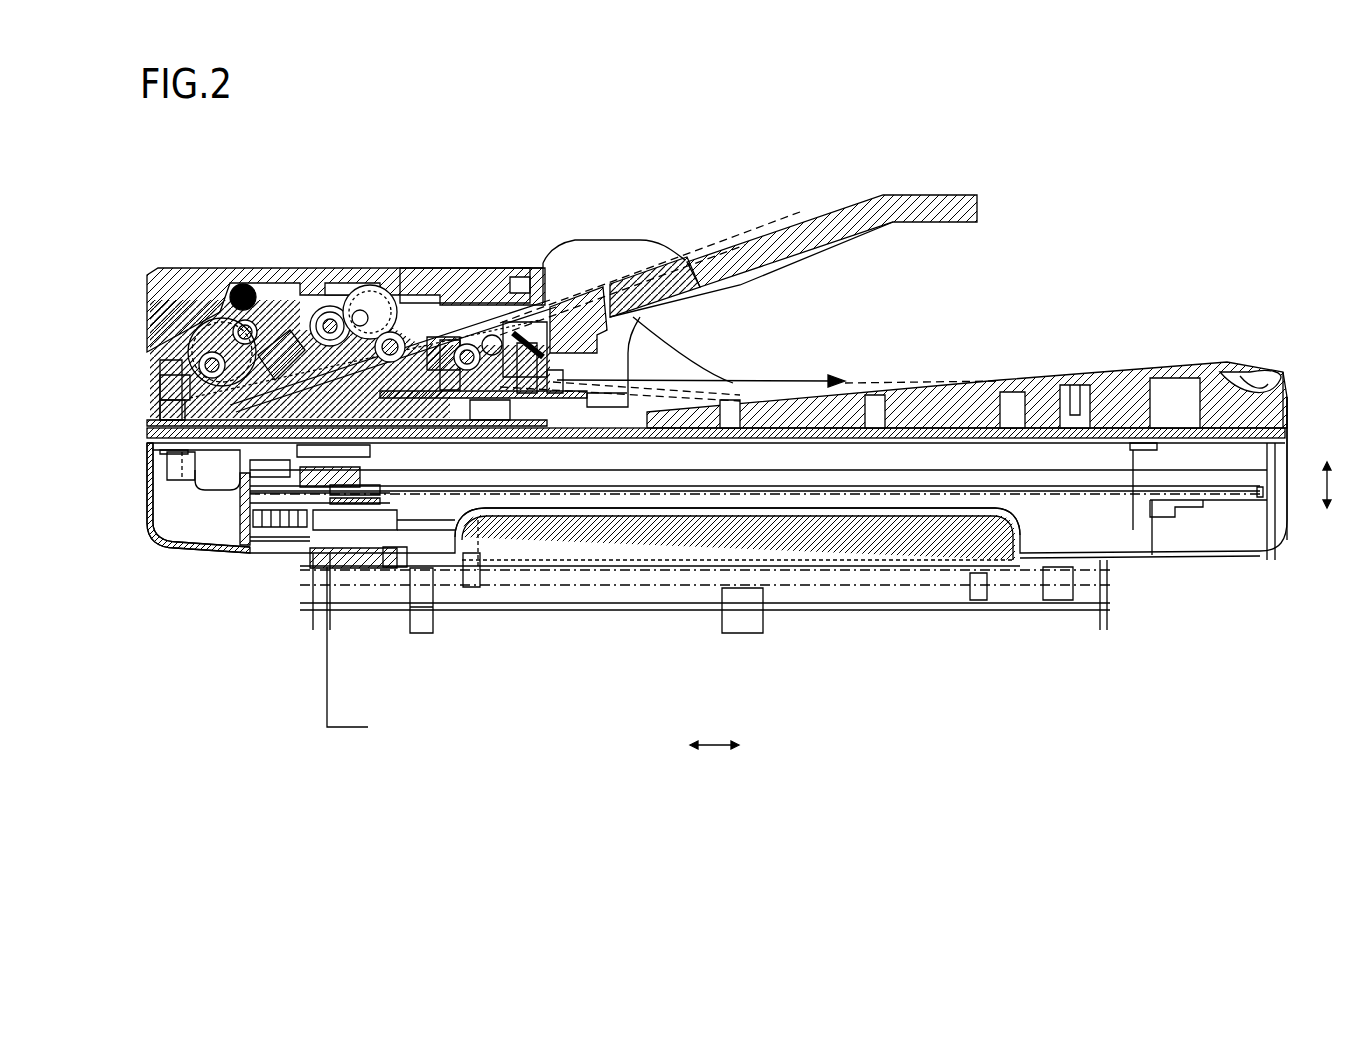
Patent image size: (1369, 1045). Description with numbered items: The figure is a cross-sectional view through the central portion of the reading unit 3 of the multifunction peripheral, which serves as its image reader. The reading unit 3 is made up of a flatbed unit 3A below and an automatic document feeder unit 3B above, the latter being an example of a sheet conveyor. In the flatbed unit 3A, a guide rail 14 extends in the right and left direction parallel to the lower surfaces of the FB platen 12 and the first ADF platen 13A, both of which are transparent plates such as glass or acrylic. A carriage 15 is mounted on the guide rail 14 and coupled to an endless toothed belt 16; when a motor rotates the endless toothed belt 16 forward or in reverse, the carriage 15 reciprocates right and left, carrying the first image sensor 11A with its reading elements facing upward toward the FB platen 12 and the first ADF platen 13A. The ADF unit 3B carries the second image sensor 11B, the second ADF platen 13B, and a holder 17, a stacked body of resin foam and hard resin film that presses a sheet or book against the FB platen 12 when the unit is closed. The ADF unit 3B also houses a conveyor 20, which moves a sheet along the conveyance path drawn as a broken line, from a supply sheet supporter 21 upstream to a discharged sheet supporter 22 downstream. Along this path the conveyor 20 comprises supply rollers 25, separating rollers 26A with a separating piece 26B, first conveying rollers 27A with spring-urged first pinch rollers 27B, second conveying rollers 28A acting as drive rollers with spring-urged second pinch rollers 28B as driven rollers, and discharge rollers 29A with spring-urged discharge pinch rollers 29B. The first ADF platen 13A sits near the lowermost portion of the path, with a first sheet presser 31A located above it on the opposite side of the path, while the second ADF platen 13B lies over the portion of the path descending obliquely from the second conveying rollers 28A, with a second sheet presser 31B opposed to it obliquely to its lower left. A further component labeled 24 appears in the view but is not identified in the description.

The reading unit 3 is at (1161, 211).
The flatbed unit 3A is at (1262, 553).
The ADF unit 3B is at (1262, 368).
The first image sensor 11A is at (345, 458).
The second image sensor 11B is at (273, 367).
The FB platen 12 is at (596, 440).
The first ADF platen 13A is at (290, 457).
The second ADF platen 13B is at (258, 442).
The guide rail 14 is at (803, 480).
The carriage 15 is at (363, 480).
The endless toothed belt 16 is at (868, 494).
The holder 17 is at (657, 434).
The conveyor 20 is at (338, 290).
The supply sheet supporter 21 is at (692, 237).
The discharged sheet supporter 22 is at (742, 378).
The feeder housing 24 is at (417, 266).
The supply rollers 25 is at (397, 327).
The separating rollers 26A is at (347, 300).
The separating piece 26B is at (330, 306).
The first conveying rollers 27A is at (216, 330).
The first pinch rollers 27B is at (244, 285).
The second conveying rollers 28A is at (203, 343).
The second pinch rollers 28B is at (173, 357).
The discharge rollers 29A is at (477, 343).
The discharge pinch rollers 29B is at (490, 362).
The first sheet presser 31A is at (370, 448).
The second sheet presser 31B is at (193, 428).